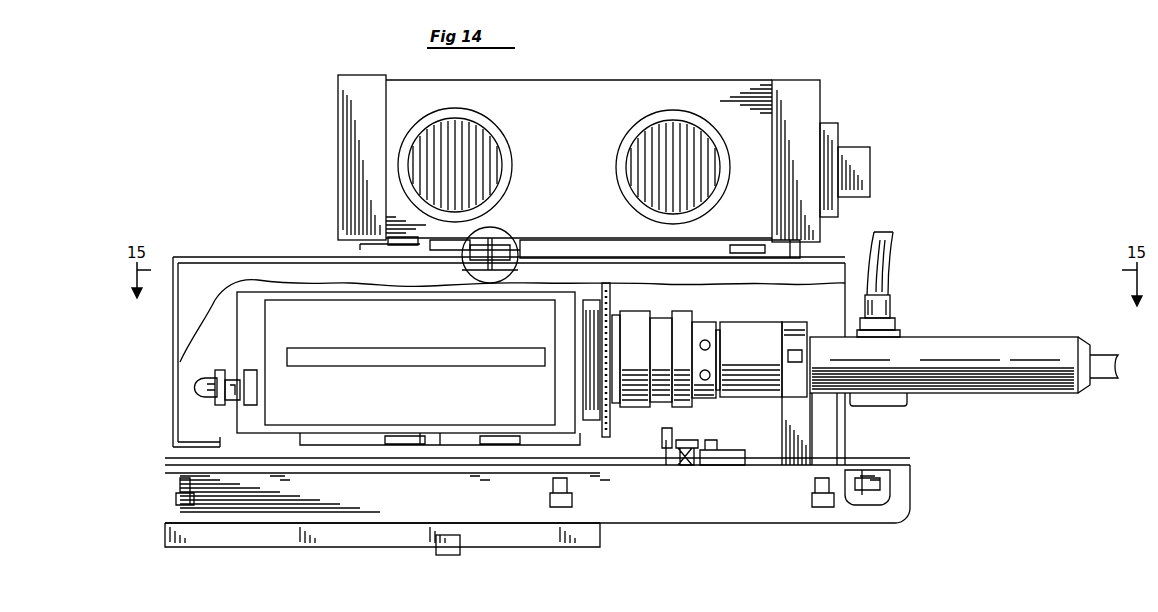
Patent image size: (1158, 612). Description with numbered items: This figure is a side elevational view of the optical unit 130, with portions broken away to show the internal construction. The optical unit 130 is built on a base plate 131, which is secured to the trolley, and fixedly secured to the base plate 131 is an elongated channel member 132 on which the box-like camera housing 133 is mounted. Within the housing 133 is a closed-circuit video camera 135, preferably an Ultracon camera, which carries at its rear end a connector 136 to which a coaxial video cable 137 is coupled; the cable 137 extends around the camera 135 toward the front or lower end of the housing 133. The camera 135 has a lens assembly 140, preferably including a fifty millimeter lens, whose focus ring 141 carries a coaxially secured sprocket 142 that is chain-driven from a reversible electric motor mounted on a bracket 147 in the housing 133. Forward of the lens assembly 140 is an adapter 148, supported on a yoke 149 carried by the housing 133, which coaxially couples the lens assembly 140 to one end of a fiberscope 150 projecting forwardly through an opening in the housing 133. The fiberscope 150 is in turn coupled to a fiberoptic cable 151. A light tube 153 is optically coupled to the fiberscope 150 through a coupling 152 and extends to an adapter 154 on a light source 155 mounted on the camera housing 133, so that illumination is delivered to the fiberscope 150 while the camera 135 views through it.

The optical unit 130 is at (917, 88).
The base plate 131 is at (558, 546).
The elongated channel member 132 is at (742, 523).
The camera housing 133 is at (210, 255).
The closed-circuit video camera 135 is at (296, 305).
The connector 136 is at (226, 376).
The coaxial video cable 137 is at (195, 388).
The lens assembly 140 is at (650, 315).
The focus ring 141 is at (585, 328).
The sprocket 142 is at (600, 348).
The bracket 147 is at (675, 437).
The adapter 148 is at (748, 325).
The yoke 149 is at (786, 422).
The fiberscope 150 is at (990, 337).
The fiberoptic cable 151 is at (1105, 359).
The coupling 152 is at (900, 403).
The light tube 153 is at (893, 263).
The adapter 154 is at (855, 150).
The light source 155 is at (633, 90).